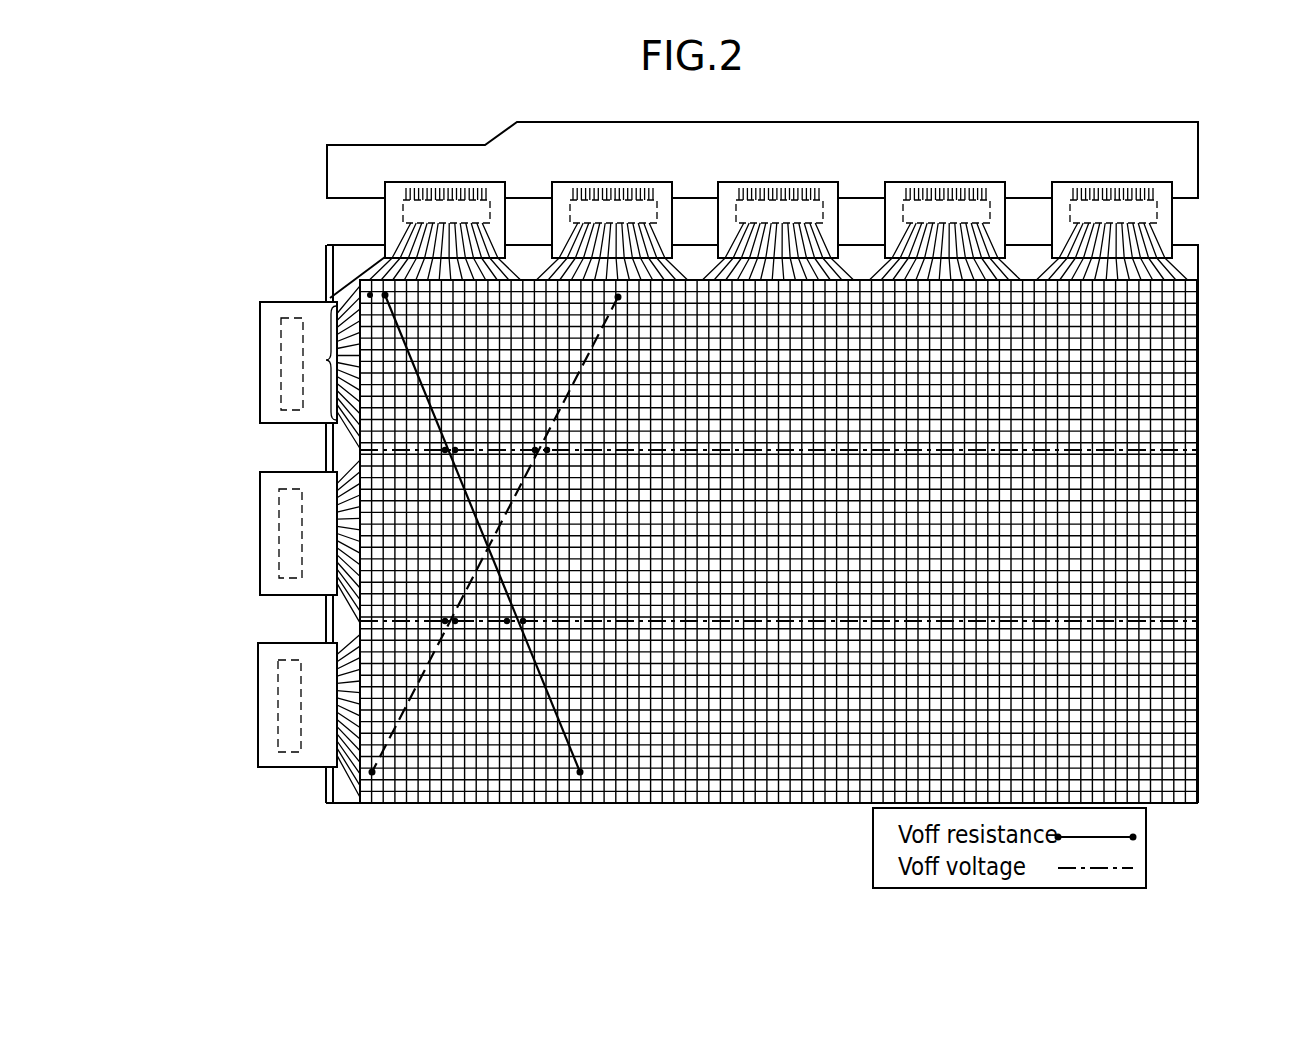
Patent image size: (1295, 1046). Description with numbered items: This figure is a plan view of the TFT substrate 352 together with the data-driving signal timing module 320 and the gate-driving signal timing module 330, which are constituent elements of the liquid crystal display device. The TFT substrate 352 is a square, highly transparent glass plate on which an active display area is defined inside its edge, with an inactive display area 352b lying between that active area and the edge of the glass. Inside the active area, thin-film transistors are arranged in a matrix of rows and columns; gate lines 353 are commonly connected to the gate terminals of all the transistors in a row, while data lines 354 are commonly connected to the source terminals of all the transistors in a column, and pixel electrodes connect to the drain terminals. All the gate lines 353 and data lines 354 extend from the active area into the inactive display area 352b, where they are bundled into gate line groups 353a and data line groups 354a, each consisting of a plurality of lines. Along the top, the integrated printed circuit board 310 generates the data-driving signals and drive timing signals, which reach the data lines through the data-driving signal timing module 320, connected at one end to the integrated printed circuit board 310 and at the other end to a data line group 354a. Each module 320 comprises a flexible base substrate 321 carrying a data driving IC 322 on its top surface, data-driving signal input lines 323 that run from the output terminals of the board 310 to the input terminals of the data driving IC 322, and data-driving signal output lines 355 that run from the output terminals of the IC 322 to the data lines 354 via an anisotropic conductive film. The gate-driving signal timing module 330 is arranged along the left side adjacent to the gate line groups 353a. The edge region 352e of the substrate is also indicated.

The integrated printed circuit board 310 is at (688, 138).
The data-driving signal timing module 320 is at (433, 177).
The flexible base substrate 321 is at (485, 183).
The data driving IC 322 is at (403, 190).
The data-driving signal input lines 323 is at (410, 210).
The gate-driving signal timing module 330 is at (260, 534).
The TFT substrate 352 is at (1204, 542).
The inactive display area 352b is at (334, 268).
The edge of substrate 352e is at (1184, 728).
The gate lines 353 is at (343, 782).
The gate line groups 353a is at (254, 358).
The data lines 354 is at (383, 258).
The data line groups 354a is at (445, 240).
The data-driving signal output lines 355 is at (498, 236).